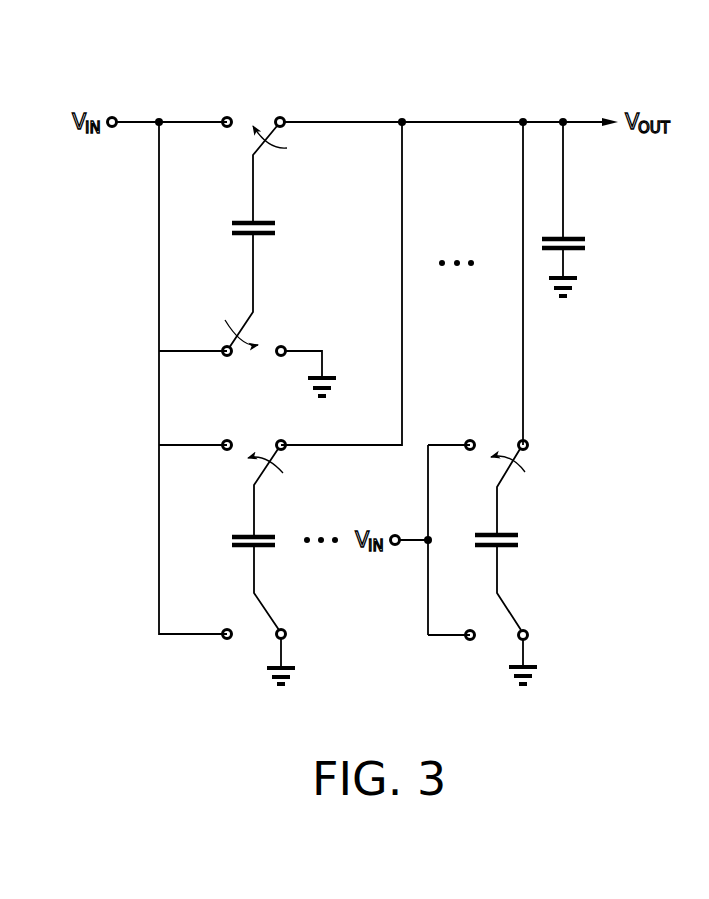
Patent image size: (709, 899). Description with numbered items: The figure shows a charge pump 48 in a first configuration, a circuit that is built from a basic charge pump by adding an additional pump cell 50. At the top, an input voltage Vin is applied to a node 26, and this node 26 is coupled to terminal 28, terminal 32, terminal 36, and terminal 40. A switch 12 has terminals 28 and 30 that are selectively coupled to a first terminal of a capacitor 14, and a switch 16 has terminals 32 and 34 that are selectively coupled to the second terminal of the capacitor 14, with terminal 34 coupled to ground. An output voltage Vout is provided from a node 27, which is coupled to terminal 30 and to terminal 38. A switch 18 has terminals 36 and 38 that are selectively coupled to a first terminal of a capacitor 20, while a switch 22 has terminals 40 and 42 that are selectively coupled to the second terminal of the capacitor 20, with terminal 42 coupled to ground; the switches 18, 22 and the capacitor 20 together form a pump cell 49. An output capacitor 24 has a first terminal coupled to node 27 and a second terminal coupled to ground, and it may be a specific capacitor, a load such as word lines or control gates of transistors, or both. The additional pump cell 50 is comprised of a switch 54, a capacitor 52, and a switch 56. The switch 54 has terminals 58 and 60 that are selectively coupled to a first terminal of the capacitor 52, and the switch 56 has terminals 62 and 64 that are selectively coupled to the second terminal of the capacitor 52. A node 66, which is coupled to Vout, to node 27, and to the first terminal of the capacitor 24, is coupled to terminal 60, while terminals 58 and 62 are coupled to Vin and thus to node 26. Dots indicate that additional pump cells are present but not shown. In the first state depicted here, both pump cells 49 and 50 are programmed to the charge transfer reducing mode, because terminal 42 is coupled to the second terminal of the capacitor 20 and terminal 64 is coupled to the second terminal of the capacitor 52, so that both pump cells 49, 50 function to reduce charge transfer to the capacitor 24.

The switch 12 is at (245, 135).
The capacitor 14 is at (267, 222).
The switch 16 is at (270, 330).
The switch 18 is at (233, 468).
The capacitor 20 is at (266, 535).
The switch 22 is at (244, 612).
The capacitor 24 is at (575, 237).
The node 26 is at (159, 118).
The node 27 is at (402, 118).
The terminal 28 is at (227, 116).
The terminal 30 is at (280, 116).
The terminal 32 is at (226, 346).
The terminal 34 is at (281, 357).
The terminal 36 is at (226, 440).
The terminal 38 is at (282, 440).
The terminal 40 is at (227, 641).
The terminal 42 is at (282, 628).
The charge pump 48 is at (352, 70).
The pump cell 49 is at (318, 492).
The pump cell 50 is at (497, 433).
The capacitor 52 is at (488, 533).
The switch 54 is at (537, 490).
The switch 56 is at (493, 622).
The terminal 58 is at (470, 452).
The terminal 60 is at (529, 444).
The terminal 62 is at (470, 642).
The terminal 64 is at (525, 628).
The node 66 is at (523, 118).